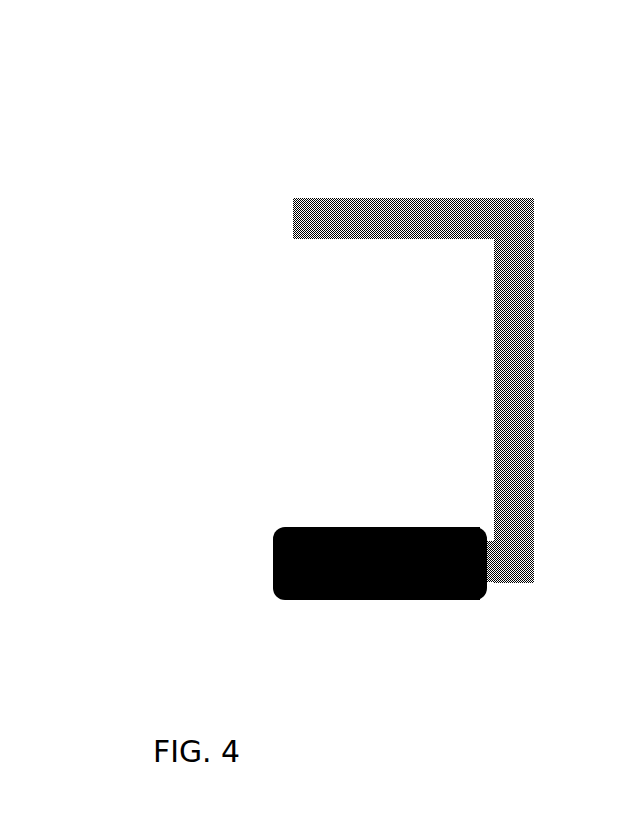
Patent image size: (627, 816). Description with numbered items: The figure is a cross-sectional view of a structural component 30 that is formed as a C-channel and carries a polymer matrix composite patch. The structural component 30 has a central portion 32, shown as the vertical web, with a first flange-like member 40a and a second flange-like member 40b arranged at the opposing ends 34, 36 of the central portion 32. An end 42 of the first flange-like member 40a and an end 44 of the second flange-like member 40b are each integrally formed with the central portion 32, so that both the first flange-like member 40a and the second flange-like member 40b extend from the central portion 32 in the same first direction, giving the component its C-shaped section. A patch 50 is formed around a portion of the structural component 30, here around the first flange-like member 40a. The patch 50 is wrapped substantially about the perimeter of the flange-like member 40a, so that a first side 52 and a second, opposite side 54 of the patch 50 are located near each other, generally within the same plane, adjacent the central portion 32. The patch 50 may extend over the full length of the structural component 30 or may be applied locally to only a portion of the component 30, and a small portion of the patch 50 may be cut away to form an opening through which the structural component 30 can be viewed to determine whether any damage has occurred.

The structural component 30 is at (270, 146).
The central portion 32 is at (533, 373).
The end of the central portion 34 is at (513, 531).
The end of the central portion 36 is at (517, 253).
The first flange-like member 40a is at (347, 565).
The second flange-like member 40b is at (392, 213).
The end of the first flange-like member 42 is at (513, 563).
The end of the second flange-like member 44 is at (513, 217).
The patch 50 is at (272, 545).
The first side of the patch 52 is at (470, 527).
The second side of the patch 54 is at (472, 602).